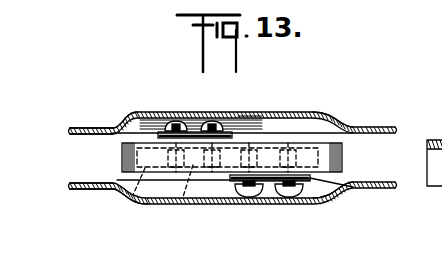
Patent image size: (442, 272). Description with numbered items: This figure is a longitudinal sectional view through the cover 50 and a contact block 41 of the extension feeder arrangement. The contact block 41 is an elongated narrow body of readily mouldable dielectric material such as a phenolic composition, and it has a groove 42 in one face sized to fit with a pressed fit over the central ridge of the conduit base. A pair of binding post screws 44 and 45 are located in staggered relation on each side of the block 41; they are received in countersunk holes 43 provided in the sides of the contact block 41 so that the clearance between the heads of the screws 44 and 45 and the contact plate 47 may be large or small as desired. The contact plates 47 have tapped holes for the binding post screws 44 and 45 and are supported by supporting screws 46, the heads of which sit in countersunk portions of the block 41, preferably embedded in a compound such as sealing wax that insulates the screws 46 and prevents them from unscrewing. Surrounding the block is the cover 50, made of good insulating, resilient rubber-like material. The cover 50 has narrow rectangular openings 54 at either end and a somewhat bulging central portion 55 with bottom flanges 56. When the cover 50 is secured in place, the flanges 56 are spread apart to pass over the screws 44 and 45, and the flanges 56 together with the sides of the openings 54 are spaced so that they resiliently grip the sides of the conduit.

The contact block 41 is at (133, 156).
The groove 42 is at (347, 191).
The countersunk hole 43 is at (290, 172).
The binding post screw 44 is at (227, 112).
The binding post screw 45 is at (163, 111).
The supporting screw 46 is at (270, 160).
The contact plate 47 is at (192, 112).
The cover 50 is at (348, 120).
The rectangular opening 54 is at (388, 131).
The central portion 55 is at (317, 110).
The bottom flange 56 is at (127, 127).